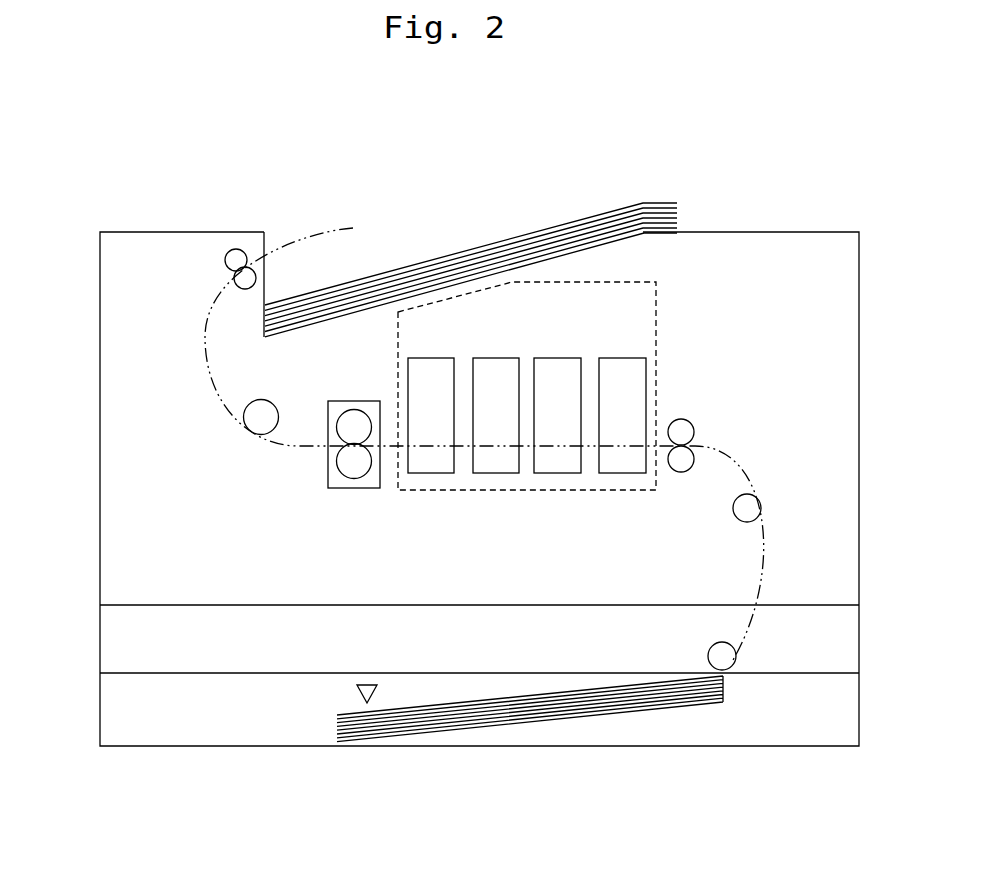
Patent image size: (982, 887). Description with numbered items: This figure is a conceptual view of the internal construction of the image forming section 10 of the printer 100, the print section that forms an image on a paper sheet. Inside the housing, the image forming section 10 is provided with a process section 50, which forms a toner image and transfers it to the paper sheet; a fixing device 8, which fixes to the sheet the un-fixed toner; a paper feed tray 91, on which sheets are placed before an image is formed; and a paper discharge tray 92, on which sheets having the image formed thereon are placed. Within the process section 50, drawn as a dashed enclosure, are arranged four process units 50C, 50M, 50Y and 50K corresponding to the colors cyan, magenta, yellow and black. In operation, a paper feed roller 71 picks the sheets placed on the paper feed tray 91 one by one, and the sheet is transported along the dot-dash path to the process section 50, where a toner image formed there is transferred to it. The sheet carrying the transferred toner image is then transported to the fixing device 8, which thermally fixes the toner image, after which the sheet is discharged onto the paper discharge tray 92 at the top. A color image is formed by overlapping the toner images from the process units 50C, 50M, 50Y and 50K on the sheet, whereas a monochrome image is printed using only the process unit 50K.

The printer 100 is at (745, 198).
The image forming section 10 is at (128, 450).
The fixing device 8 is at (347, 401).
The process section 50 is at (656, 333).
The process unit 50C is at (428, 473).
The process unit 50M is at (498, 473).
The process unit 50Y is at (557, 473).
The process unit 50K is at (617, 473).
The paper feed roller 71 is at (708, 658).
The paper feed tray 91 is at (452, 735).
The paper discharge tray 92 is at (565, 253).